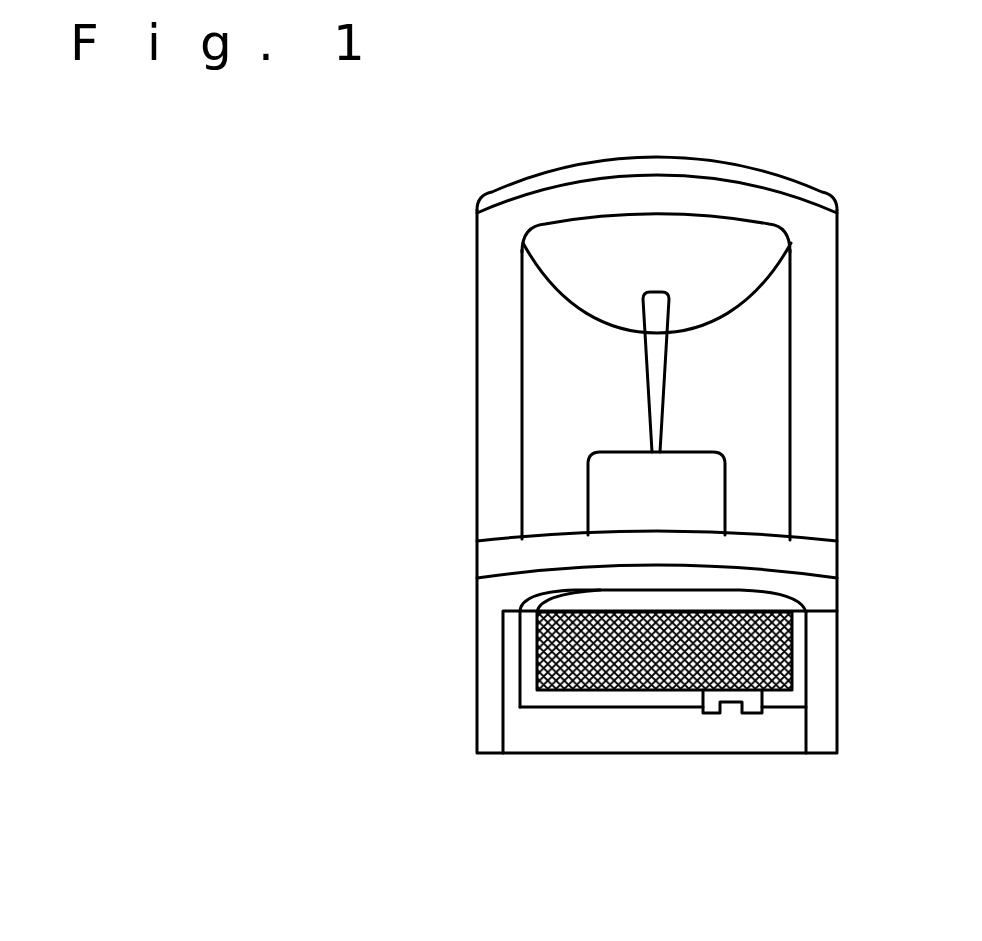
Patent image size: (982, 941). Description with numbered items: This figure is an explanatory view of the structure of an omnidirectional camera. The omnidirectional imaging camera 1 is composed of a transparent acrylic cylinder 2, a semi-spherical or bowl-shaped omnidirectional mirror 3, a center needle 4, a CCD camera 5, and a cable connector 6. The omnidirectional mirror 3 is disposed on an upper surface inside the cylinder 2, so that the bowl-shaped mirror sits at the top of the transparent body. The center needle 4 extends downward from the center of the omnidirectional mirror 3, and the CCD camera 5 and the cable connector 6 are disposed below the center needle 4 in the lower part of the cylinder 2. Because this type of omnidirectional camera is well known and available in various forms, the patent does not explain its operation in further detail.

The omnidirectional imaging camera 1 is at (683, 148).
The transparent acrylic cylinder 2 is at (477, 393).
The omnidirectional mirror 3 is at (567, 263).
The center needle 4 is at (663, 364).
The CCD camera 5 is at (583, 692).
The cable connector 6 is at (714, 701).